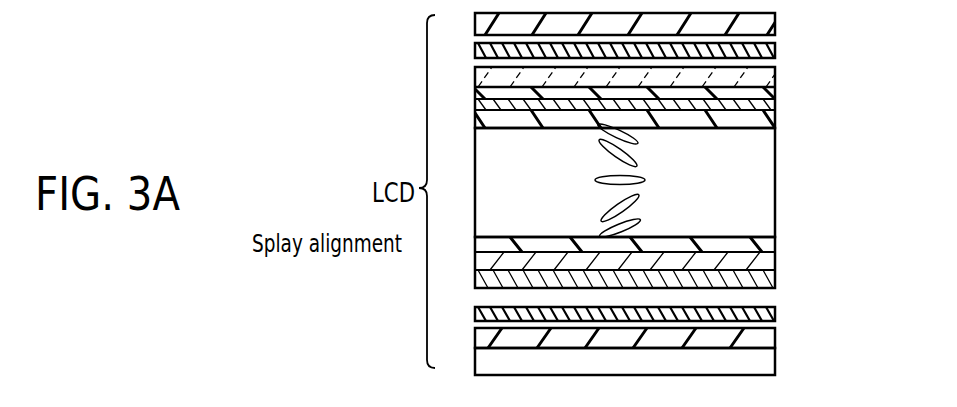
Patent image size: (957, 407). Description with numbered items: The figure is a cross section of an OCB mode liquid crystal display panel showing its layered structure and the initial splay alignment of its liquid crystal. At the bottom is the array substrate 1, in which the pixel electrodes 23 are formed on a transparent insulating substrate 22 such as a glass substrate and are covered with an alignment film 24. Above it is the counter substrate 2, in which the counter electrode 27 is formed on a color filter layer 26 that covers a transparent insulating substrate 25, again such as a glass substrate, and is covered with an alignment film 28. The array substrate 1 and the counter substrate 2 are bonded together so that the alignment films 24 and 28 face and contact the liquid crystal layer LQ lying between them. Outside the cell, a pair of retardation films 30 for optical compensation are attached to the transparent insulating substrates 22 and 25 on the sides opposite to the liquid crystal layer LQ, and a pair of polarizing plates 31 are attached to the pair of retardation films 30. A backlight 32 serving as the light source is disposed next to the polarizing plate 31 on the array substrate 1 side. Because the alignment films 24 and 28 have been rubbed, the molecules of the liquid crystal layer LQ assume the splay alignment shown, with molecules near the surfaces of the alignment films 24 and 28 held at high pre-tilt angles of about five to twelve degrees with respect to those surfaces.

The array substrate 1 is at (685, 256).
The counter substrate 2 is at (684, 110).
The transparent insulating substrate 22 is at (665, 284).
The pixel electrodes 23 is at (778, 262).
The alignment film 24 is at (778, 244).
The transparent insulating substrate 25 is at (778, 78).
The color filter layer 26 is at (778, 92).
The counter electrode 27 is at (778, 104).
The alignment film 28 is at (662, 138).
The retardation films 30 is at (778, 50).
The polarizing plates 31 is at (778, 22).
The backlight 32 is at (778, 362).
The liquid crystal layer LQ is at (768, 182).